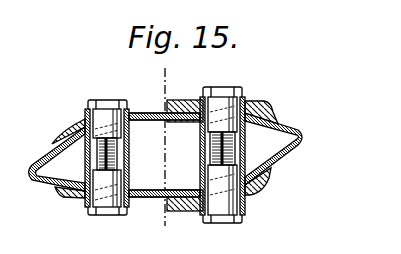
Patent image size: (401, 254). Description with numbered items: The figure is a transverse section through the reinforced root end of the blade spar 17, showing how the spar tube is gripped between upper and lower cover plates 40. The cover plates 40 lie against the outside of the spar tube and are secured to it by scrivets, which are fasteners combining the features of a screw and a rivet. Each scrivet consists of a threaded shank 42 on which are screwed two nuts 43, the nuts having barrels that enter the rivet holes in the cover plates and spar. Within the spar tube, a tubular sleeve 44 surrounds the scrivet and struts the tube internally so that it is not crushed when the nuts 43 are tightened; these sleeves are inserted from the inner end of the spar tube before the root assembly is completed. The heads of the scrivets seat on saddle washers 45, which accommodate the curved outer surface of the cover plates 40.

The blade spar 17 is at (303, 134).
The cover plates 40 is at (73, 131).
The threaded shank 42 is at (243, 146).
The nuts 43 is at (224, 96).
The tubular sleeves 44 is at (197, 150).
The saddle washers 45 is at (244, 99).